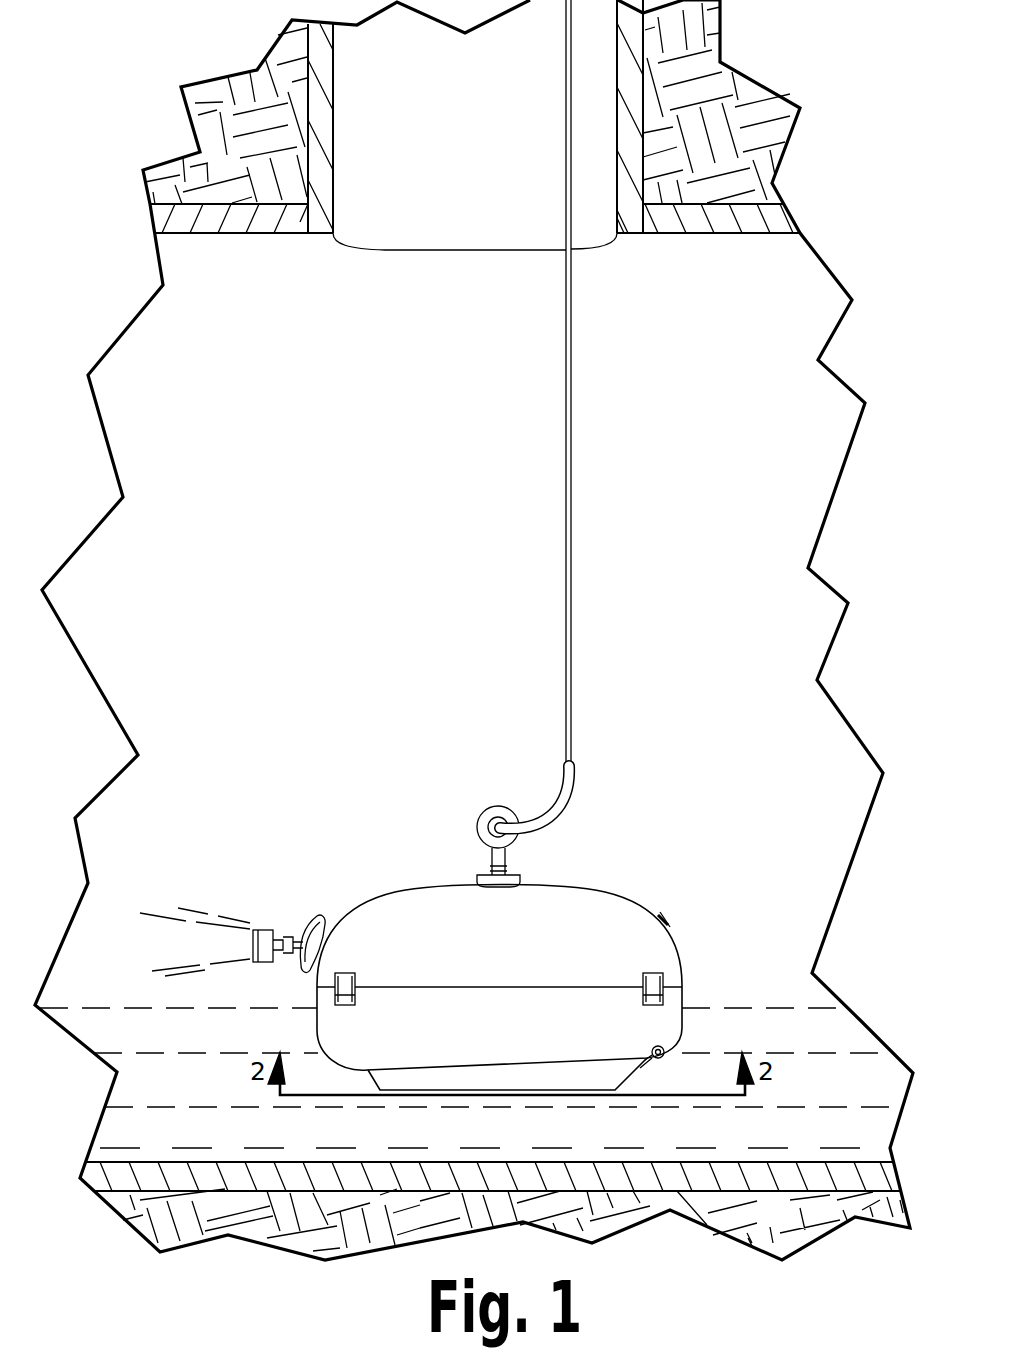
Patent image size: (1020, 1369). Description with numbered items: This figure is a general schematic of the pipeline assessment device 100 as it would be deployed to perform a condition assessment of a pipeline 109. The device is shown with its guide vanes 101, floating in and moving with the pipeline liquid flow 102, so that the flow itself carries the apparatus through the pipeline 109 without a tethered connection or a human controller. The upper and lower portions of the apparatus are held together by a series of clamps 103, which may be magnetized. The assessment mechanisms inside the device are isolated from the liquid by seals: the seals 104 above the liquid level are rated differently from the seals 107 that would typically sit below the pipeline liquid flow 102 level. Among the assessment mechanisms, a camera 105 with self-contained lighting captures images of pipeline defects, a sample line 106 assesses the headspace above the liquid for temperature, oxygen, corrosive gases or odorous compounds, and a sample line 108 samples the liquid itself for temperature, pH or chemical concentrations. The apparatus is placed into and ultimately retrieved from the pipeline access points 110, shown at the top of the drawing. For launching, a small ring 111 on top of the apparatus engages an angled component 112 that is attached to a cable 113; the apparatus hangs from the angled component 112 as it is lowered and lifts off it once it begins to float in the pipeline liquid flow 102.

The pipeline assessment device 100 is at (390, 860).
The guide vanes 101 is at (413, 1091).
The pipeline liquid flow 102 is at (145, 1007).
The clamps 103 is at (350, 972).
The seals 104 is at (312, 920).
The camera 105 is at (232, 946).
The sample line 106 is at (668, 922).
The seals 107 is at (665, 1050).
The sample line 108 is at (664, 1057).
The pipeline 109 is at (240, 240).
The pipeline access point 110 is at (340, 177).
The ring 111 is at (477, 820).
The angled component 112 is at (568, 812).
The cable 113 is at (566, 582).